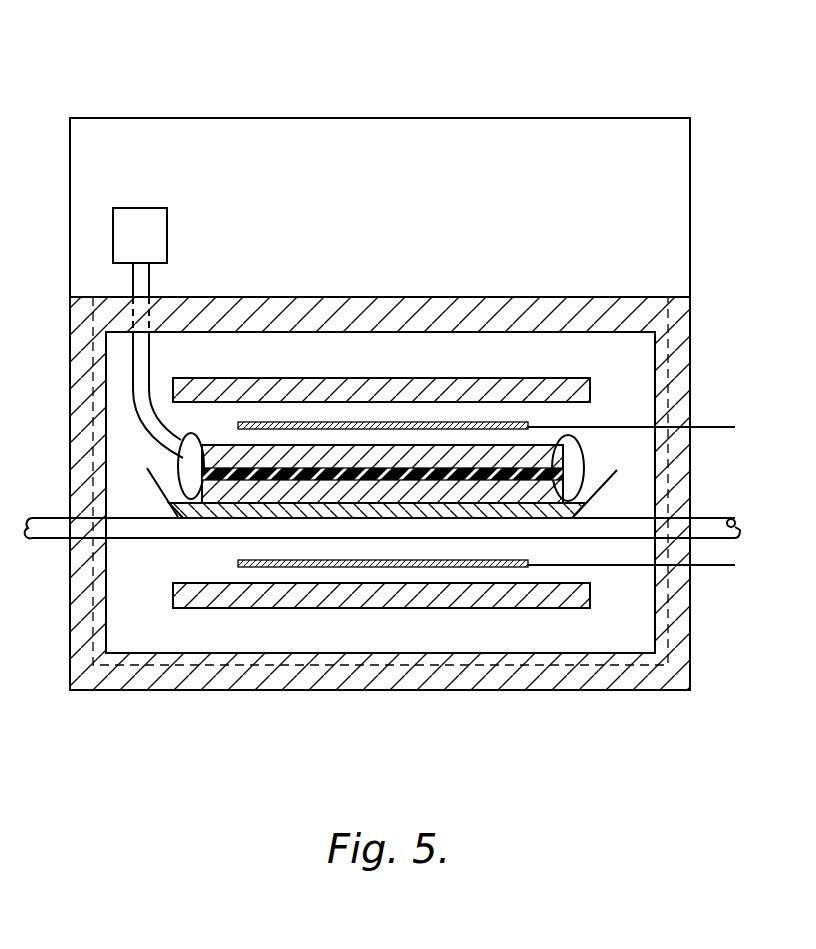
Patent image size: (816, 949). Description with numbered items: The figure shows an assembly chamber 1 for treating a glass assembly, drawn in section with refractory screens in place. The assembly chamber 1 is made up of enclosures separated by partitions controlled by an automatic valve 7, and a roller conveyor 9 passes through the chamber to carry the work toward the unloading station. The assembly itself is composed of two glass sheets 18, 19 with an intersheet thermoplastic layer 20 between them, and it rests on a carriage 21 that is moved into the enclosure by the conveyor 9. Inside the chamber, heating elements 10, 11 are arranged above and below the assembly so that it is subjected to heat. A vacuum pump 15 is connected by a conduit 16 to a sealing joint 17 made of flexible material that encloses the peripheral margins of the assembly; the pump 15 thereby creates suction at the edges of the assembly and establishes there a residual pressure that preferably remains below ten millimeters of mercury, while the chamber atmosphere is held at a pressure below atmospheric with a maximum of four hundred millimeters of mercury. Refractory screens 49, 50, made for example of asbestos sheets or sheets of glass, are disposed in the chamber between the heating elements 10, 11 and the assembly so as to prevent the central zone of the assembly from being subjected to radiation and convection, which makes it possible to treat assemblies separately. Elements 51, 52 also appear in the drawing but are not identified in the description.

The assembly chamber 1 is at (452, 693).
The automatic valve 7 is at (508, 118).
The roller conveyor 9 is at (49, 540).
The heating element 10 is at (477, 385).
The heating element 11 is at (470, 598).
The vacuum pump 15 is at (137, 232).
The conduit 16 is at (144, 389).
The sealing joint 17 is at (178, 463).
The glass sheet 18 is at (242, 453).
The glass sheet 19 is at (242, 490).
The intersheet thermoplastic layer 20 is at (200, 478).
The carriage 21 is at (587, 507).
The refractory screen 49 is at (369, 422).
The refractory screen 50 is at (369, 570).
The upper lead 51 is at (712, 427).
The lower lead 52 is at (712, 567).